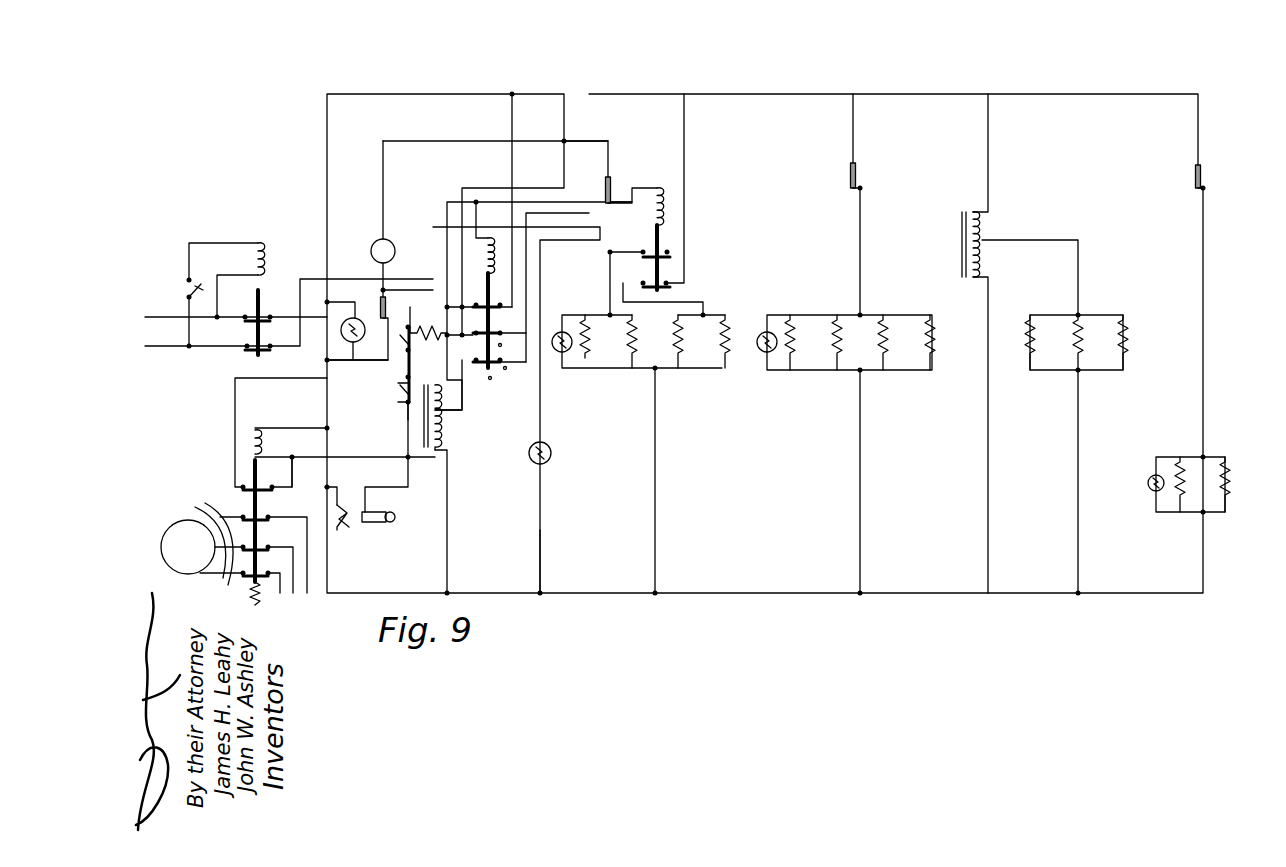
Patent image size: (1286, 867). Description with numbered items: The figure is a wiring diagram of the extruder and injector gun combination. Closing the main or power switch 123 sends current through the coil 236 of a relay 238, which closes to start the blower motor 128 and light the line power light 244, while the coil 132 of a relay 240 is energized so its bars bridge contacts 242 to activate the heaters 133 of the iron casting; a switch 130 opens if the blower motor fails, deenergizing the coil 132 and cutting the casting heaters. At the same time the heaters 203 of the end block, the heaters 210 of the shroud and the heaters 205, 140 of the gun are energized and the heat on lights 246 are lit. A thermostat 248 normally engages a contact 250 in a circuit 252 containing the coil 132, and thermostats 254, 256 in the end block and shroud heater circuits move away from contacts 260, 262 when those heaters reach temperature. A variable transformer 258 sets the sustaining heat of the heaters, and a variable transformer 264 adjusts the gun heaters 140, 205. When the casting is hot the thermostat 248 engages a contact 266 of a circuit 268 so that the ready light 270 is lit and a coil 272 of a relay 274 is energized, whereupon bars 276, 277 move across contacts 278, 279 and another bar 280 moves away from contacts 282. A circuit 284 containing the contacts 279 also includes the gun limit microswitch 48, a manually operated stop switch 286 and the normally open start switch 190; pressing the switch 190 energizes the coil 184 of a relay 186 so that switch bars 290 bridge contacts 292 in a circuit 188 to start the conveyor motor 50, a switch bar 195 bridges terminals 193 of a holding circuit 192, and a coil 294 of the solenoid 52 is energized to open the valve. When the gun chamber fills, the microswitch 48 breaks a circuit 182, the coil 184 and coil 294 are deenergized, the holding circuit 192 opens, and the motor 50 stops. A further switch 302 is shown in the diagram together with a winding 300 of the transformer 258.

The main or power switch 123 is at (191, 280).
The coil 236 is at (262, 252).
The relay 238 is at (274, 288).
The blower motor 128 is at (375, 242).
The line power light 244 is at (360, 322).
The circuit 182 is at (392, 302).
The switch 130 is at (378, 320).
The microswitch 48 is at (418, 330).
The switch 302 is at (410, 372).
The stop switch 286 is at (406, 384).
The start switch 190 is at (406, 401).
The circuit 284 is at (408, 420).
The coil 272 is at (492, 242).
The contacts 279 is at (500, 303).
The bar 277 is at (490, 320).
The bar 280 is at (502, 333).
The contacts 282 is at (502, 345).
The contacts 278 is at (502, 358).
The bar 276 is at (507, 368).
The relay 274 is at (500, 380).
The secondary winding 300 is at (460, 400).
The variable transformer 258 is at (458, 432).
The ready light 270 is at (549, 460).
The circuit 268 is at (540, 548).
The contact 266 is at (606, 196).
The thermostat 248 is at (609, 190).
The contact 250 is at (615, 195).
The circuit 252 is at (661, 190).
The coil 132 is at (664, 214).
The contacts 242 is at (666, 253).
The relay 240 is at (708, 273).
The heat on lights 246 is at (568, 334).
The heaters 133 is at (694, 345).
The thermostat 254 is at (860, 176).
The contact 260 is at (861, 189).
The variable transformer 264 is at (978, 238).
The electric heaters 203 is at (934, 345).
The electric heaters 205 is at (1036, 332).
The gun heaters 140 is at (1126, 334).
The thermostat 256 is at (1203, 174).
The contact 262 is at (1206, 189).
The electric heaters 210 is at (1222, 480).
The relay 186 is at (177, 453).
The coil 184 is at (253, 452).
The holding circuit 192 is at (303, 452).
The terminals 193 is at (262, 490).
The switch bar 195 is at (250, 497).
The electric motor 50 is at (163, 537).
The circuit 188 is at (206, 518).
The contacts 292 is at (269, 516).
The switch bars 290 is at (250, 582).
The coil 294 is at (341, 527).
The solenoid 52 is at (383, 530).